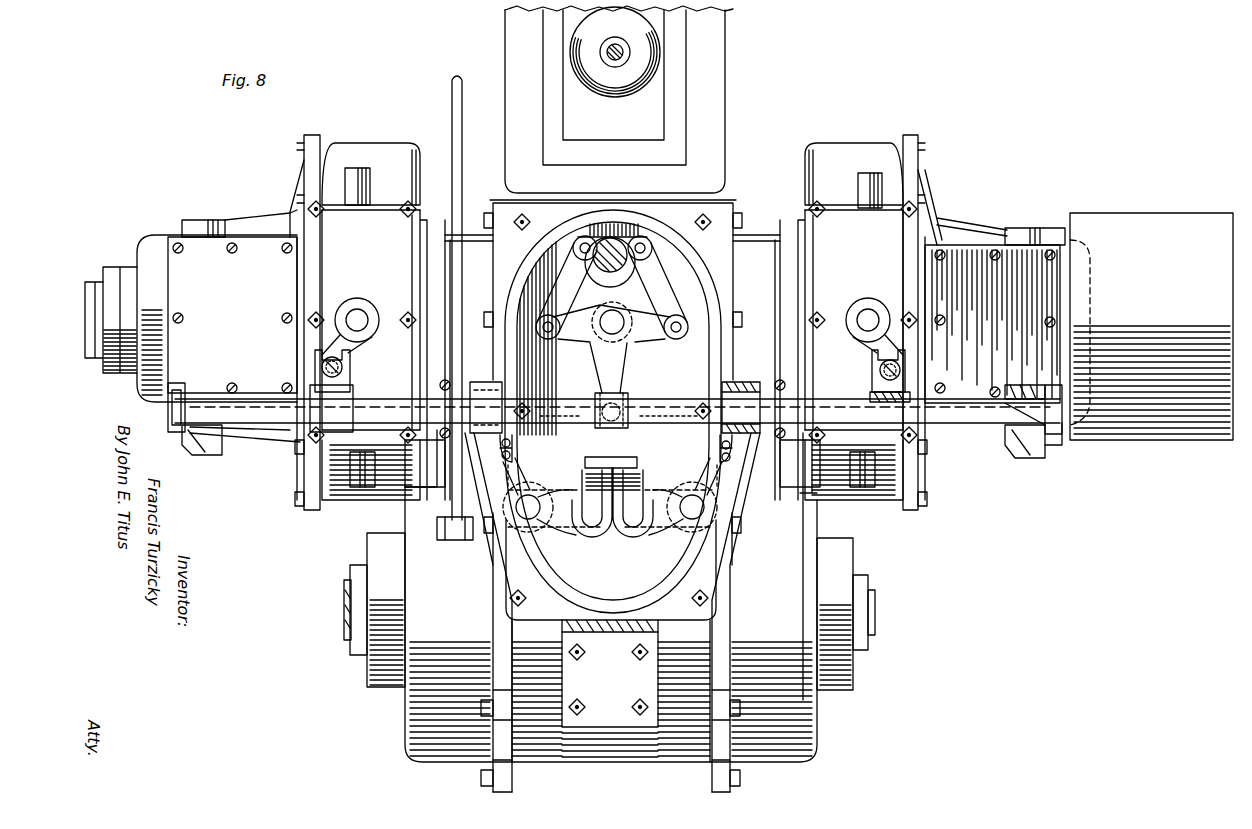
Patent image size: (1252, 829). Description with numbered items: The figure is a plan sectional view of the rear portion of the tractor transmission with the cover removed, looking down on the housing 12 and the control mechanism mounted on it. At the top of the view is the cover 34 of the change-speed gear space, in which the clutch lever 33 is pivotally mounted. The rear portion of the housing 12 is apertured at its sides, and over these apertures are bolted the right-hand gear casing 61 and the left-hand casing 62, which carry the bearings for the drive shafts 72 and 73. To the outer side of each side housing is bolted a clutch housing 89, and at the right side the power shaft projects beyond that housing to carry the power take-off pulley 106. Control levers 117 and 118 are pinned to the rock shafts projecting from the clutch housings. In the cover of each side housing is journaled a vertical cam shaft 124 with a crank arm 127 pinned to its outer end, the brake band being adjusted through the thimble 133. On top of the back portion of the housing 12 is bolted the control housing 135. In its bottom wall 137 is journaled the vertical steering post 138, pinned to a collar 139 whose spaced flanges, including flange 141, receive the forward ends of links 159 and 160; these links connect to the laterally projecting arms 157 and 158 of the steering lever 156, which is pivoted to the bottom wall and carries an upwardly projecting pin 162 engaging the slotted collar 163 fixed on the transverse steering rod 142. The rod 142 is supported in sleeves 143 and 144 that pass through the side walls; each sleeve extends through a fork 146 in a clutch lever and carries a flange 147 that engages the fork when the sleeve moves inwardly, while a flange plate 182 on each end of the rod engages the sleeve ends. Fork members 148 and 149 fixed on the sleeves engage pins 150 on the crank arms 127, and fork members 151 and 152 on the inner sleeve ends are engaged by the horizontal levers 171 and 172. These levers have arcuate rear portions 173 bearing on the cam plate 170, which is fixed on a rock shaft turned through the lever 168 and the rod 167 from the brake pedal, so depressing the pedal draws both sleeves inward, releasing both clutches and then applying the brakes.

The housing 12 is at (652, 753).
The clutch lever 33 is at (618, 56).
The cover 34 is at (613, 103).
The right-hand gear casing 61 is at (807, 727).
The left-hand casing 62 is at (452, 750).
The drive shaft 72 is at (863, 588).
The drive shaft 73 is at (360, 585).
The clutch housing 89 is at (891, 322).
The power take-off pulley 106 is at (1154, 433).
The control lever 117 is at (1028, 447).
The control lever 118 is at (198, 440).
The cam shaft 124 is at (359, 322).
The crank arm 127 is at (866, 370).
The thimble 133 is at (862, 192).
The control housing 135 is at (629, 611).
The bottom wall 137 is at (708, 368).
The steering post 138 is at (614, 262).
The collar 139 is at (635, 242).
The flange 141 is at (598, 282).
The steering rod 142 is at (648, 408).
The sleeve 143 is at (835, 405).
The sleeve 144 is at (375, 397).
The fork 146 is at (1013, 397).
The flange 147 is at (1047, 390).
The fork member 148 is at (907, 385).
The fork member 149 is at (353, 373).
The pin 150 is at (883, 372).
The fork member 151 is at (712, 447).
The fork member 152 is at (590, 427).
The steering lever 156 is at (622, 366).
The arm 157 is at (655, 335).
The arm 158 is at (568, 330).
The link 159 is at (621, 307).
The link 160 is at (561, 288).
The pin 162 is at (613, 430).
The slotted collar 163 is at (627, 426).
The rod 167 is at (460, 155).
The lever 168 is at (468, 533).
The cam plate 170 is at (593, 462).
The horizontal lever 171 is at (700, 480).
The horizontal lever 172 is at (522, 488).
The arcuate rear portion 173 is at (627, 516).
The flange plate 182 is at (1058, 418).